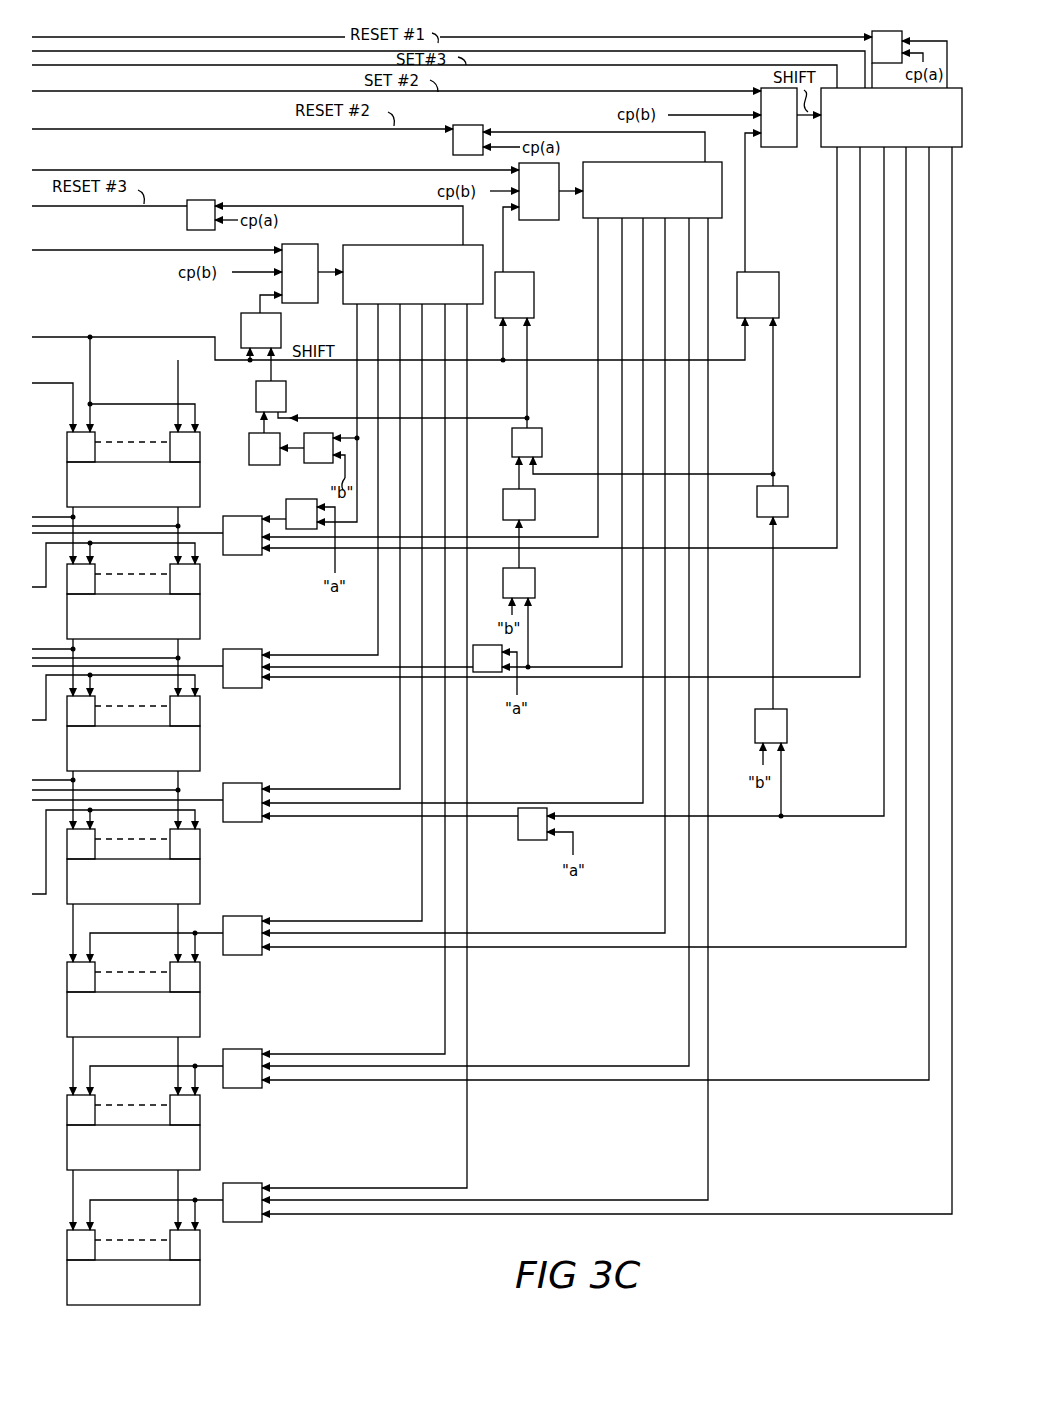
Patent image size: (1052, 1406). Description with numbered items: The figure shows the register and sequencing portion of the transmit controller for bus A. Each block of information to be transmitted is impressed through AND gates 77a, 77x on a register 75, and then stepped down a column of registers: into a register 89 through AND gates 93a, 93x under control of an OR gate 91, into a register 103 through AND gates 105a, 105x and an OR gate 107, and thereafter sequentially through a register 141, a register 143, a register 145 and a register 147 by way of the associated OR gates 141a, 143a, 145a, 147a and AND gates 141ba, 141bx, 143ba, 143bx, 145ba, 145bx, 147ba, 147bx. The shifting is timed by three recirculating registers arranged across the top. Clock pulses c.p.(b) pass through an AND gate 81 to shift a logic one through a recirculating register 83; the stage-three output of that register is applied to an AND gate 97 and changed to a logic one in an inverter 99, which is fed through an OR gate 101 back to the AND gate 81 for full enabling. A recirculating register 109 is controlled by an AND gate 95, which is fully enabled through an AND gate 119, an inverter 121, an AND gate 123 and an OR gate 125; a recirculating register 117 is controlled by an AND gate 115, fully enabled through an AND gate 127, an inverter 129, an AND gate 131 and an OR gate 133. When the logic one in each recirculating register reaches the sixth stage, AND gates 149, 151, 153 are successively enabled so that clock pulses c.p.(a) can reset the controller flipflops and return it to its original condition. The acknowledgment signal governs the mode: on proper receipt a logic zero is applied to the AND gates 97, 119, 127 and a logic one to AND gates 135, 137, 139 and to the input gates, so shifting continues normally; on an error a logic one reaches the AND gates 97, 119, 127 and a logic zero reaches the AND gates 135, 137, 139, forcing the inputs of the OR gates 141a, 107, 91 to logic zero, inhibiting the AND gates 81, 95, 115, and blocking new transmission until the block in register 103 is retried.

The AND gate 149 is at (878, 31).
The AND gate 81 is at (768, 88).
The recirculating register 83 is at (826, 147).
The AND gate 151 is at (471, 125).
The recirculating register 109 is at (650, 162).
The AND gate 95 is at (537, 220).
The AND gate 153 is at (200, 200).
The AND gate 115 is at (298, 244).
The recirculating register 117 is at (418, 245).
The OR gate 125 is at (534, 300).
The OR gate 101 is at (757, 272).
The OR gate 133 is at (281, 332).
The AND gate 131 is at (286, 394).
The AND gate 127 is at (318, 433).
The inverter 129 is at (249, 460).
The AND gate 139 is at (303, 499).
The OR gate 91 is at (244, 516).
The AND gate 123 is at (542, 440).
The inverter 121 is at (535, 505).
The AND gate 119 is at (535, 583).
The inverter 99 is at (788, 502).
The AND gate 97 is at (787, 725).
The AND gate 137 is at (487, 672).
The AND gate 135 is at (532, 840).
The OR gate 107 is at (248, 649).
The OR gate 141a is at (255, 822).
The OR gate 143a is at (240, 916).
The OR gate 145a is at (242, 1049).
The OR gate 147a is at (245, 1183).
The register 75 is at (67, 484).
The AND gate 77a is at (67, 439).
The AND gate 77x is at (200, 440).
The register 89 is at (200, 632).
The AND gate 93a is at (67, 594).
The AND gate 93x is at (200, 588).
The register 103 is at (200, 745).
The AND gate 105a is at (95, 716).
The AND gate 105x is at (200, 711).
The register 141 is at (200, 877).
The AND gate 141ba is at (95, 850).
The AND gate 141bx is at (200, 850).
The register 143 is at (200, 1009).
The AND gate 143ba is at (95, 981).
The AND gate 143bx is at (200, 979).
The register 145 is at (200, 1147).
The AND gate 145ba is at (95, 1111).
The AND gate 145bx is at (200, 1111).
The register 147 is at (200, 1277).
The AND gate 147ba is at (95, 1245).
The AND gate 147bx is at (200, 1244).